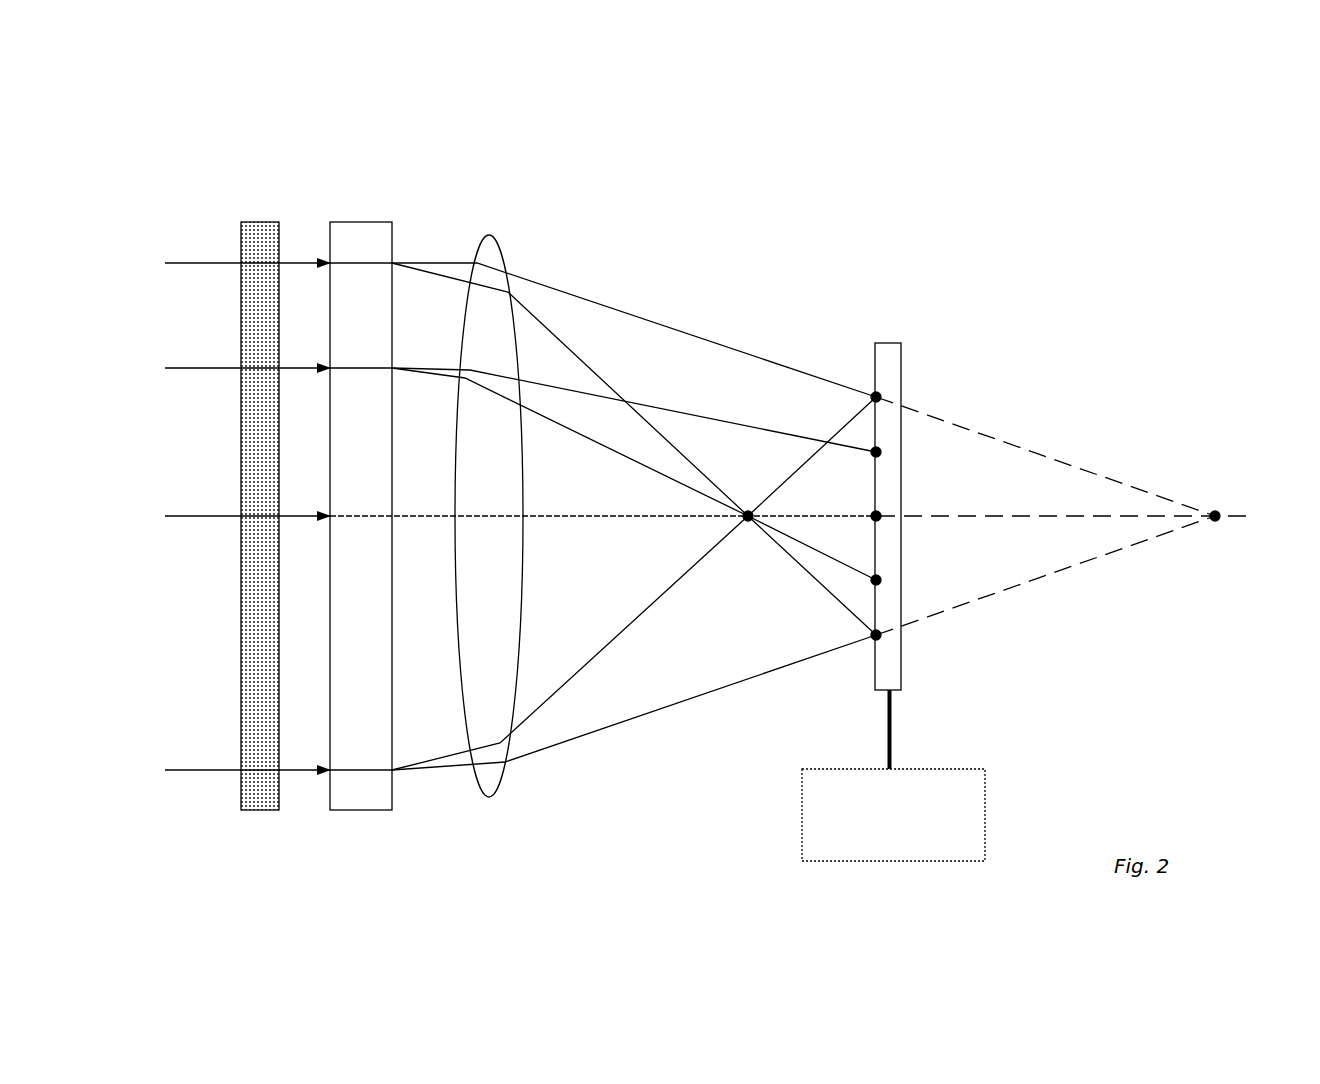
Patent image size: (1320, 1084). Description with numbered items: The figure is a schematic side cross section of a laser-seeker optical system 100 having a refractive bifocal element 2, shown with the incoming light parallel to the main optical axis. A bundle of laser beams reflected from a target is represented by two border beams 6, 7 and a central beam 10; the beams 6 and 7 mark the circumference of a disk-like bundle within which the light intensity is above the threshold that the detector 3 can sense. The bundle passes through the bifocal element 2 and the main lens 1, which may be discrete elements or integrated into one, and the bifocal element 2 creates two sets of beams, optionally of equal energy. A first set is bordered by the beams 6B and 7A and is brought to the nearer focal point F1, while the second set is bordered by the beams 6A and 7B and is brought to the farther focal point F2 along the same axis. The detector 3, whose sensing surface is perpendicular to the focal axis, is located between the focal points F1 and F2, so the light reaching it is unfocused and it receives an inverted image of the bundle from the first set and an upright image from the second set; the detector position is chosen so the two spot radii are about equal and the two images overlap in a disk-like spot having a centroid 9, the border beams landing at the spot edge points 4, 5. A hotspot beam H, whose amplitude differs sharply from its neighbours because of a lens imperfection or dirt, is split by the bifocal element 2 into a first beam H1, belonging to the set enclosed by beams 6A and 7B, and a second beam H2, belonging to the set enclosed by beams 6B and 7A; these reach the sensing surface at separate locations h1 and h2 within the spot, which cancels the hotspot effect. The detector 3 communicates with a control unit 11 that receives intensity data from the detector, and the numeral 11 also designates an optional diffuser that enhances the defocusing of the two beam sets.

The main lens 1 is at (503, 245).
The bifocal element 2 is at (365, 222).
The detector 3 is at (890, 343).
The sensor point 4 is at (880, 397).
The sensor point 5 is at (880, 635).
The beam 6 is at (178, 263).
The beam 6A is at (440, 262).
The beam 6B is at (460, 280).
The beam 7 is at (190, 770).
The beam 7A is at (452, 760).
The beam 7B is at (440, 775).
The centroid 9 is at (880, 516).
The central beam 10 is at (168, 516).
The control unit 11 is at (255, 811).
The optical system 100 is at (1118, 145).
The hotspot beam H is at (228, 368).
The first beam H1 is at (437, 368).
The second beam H2 is at (426, 377).
The location h1 is at (880, 452).
The location h2 is at (880, 580).
The focal point F1 is at (750, 519).
The focal point F2 is at (1217, 519).